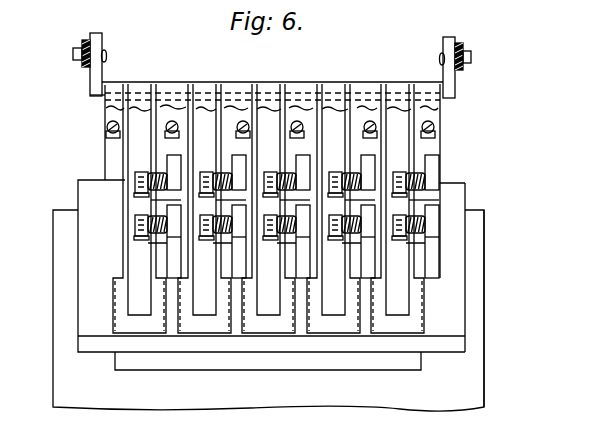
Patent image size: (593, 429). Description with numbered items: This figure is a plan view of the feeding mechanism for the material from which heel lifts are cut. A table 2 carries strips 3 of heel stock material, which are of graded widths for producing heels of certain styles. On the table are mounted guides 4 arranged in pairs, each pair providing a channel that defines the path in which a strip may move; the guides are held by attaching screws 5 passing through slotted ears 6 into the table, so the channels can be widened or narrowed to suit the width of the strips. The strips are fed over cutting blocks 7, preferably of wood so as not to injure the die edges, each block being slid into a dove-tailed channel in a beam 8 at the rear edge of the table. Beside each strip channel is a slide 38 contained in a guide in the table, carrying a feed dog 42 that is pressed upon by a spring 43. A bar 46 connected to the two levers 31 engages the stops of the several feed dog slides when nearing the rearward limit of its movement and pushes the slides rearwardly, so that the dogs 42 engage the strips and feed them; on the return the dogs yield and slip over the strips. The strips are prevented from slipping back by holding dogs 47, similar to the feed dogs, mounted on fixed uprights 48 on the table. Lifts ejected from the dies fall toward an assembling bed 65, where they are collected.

The table 2 is at (433, 110).
The strips 3 is at (135, 113).
The guides 4 is at (248, 95).
The attaching screws 5 is at (105, 127).
The slotted ears 6 is at (237, 130).
The cutting blocks 7 is at (145, 337).
The beam 8 is at (83, 281).
The levers 31 is at (86, 38).
The slide 38 is at (175, 238).
The feed dog 42 is at (147, 220).
The spring 43 is at (150, 232).
The bar 46 is at (175, 82).
The holding dogs 47 is at (145, 178).
The fixed uprights 48 is at (175, 160).
The assembling bed 65 is at (472, 370).